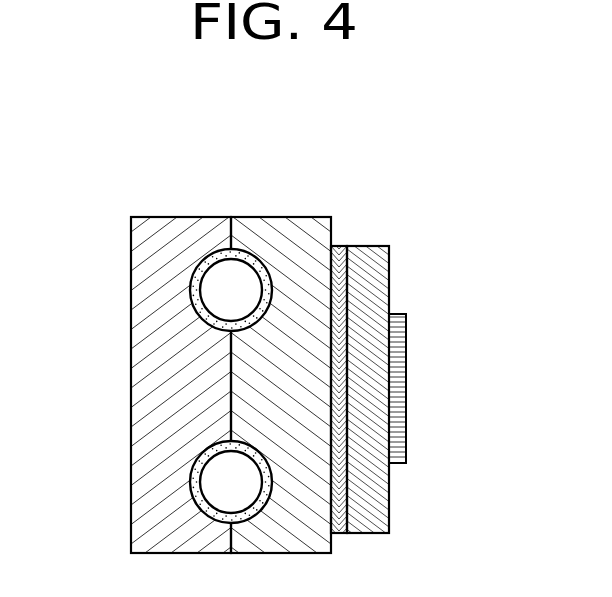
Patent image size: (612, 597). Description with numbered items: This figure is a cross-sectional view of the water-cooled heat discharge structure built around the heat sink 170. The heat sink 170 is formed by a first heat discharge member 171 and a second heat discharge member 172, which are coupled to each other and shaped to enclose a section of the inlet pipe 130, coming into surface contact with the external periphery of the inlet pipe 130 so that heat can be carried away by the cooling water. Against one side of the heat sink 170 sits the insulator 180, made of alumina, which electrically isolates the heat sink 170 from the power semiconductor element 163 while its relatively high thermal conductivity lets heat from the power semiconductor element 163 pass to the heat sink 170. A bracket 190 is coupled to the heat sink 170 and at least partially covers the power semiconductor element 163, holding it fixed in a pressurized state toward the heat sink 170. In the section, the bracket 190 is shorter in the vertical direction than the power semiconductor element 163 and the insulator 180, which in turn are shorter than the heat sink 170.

The inlet pipe 130 is at (192, 468).
The power semiconductor element 163 is at (368, 252).
The heat sink 170 is at (293, 156).
The first heat discharge member 171 is at (273, 232).
The second heat discharge member 172 is at (183, 232).
The insulator 180 is at (338, 252).
The bracket 190 is at (398, 393).